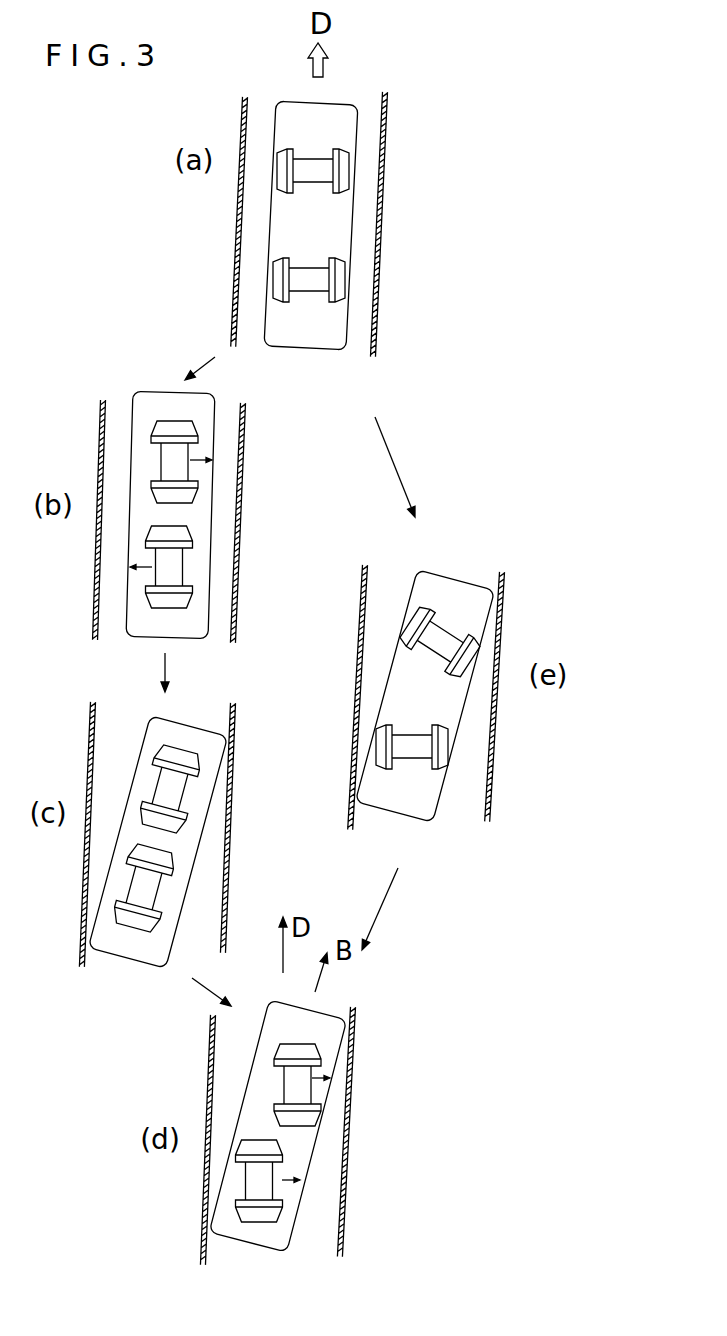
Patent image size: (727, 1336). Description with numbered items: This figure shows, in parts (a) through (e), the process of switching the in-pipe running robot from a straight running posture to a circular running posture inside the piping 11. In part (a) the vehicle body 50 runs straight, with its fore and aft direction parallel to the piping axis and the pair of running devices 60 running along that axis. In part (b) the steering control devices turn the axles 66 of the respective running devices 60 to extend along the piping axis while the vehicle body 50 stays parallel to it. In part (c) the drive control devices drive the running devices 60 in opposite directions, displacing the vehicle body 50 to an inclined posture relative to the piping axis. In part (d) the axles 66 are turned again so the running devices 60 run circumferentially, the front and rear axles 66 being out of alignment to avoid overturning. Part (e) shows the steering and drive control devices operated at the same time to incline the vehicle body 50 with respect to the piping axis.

The piping 11 is at (375, 303).
The vehicle body 50 is at (357, 118).
The running devices 60 is at (348, 277).
The axles 66 is at (303, 270).